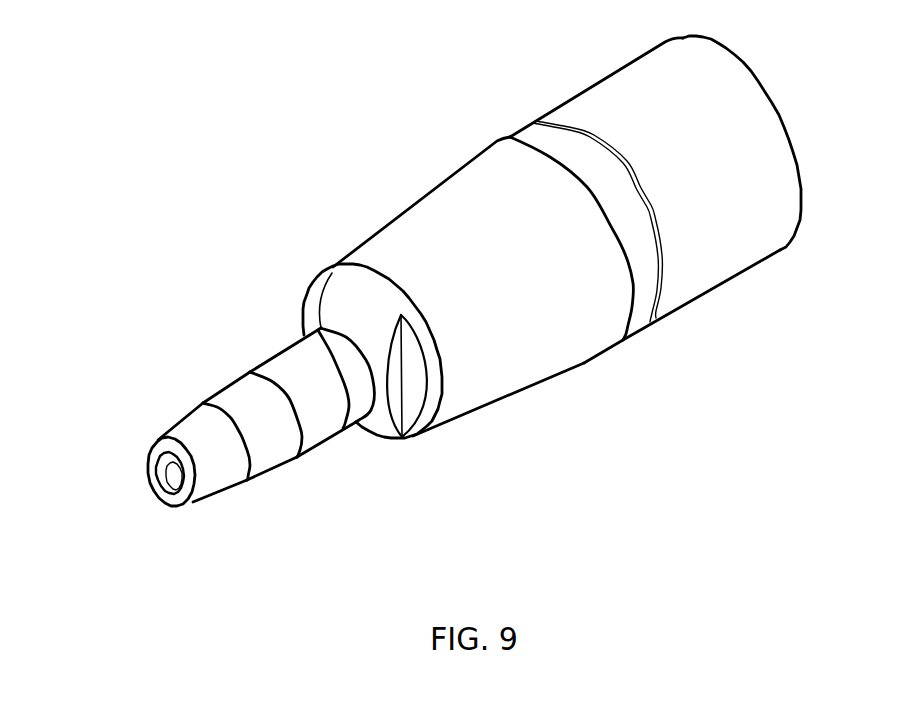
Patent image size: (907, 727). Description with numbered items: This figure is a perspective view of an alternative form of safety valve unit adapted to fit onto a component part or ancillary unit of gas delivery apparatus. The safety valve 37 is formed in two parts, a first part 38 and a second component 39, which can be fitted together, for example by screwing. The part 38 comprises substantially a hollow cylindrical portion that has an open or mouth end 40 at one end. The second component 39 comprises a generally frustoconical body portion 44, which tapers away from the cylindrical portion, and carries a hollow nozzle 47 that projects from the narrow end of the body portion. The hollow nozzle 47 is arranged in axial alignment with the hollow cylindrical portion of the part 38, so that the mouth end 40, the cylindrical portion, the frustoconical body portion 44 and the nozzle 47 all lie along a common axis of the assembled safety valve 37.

The safety valve 37 is at (402, 128).
The first part 38 is at (670, 314).
The second component 39 is at (323, 477).
The open or mouth end 40 is at (800, 122).
The frustoconical body portion 44 is at (385, 427).
The hollow nozzle 47 is at (205, 497).